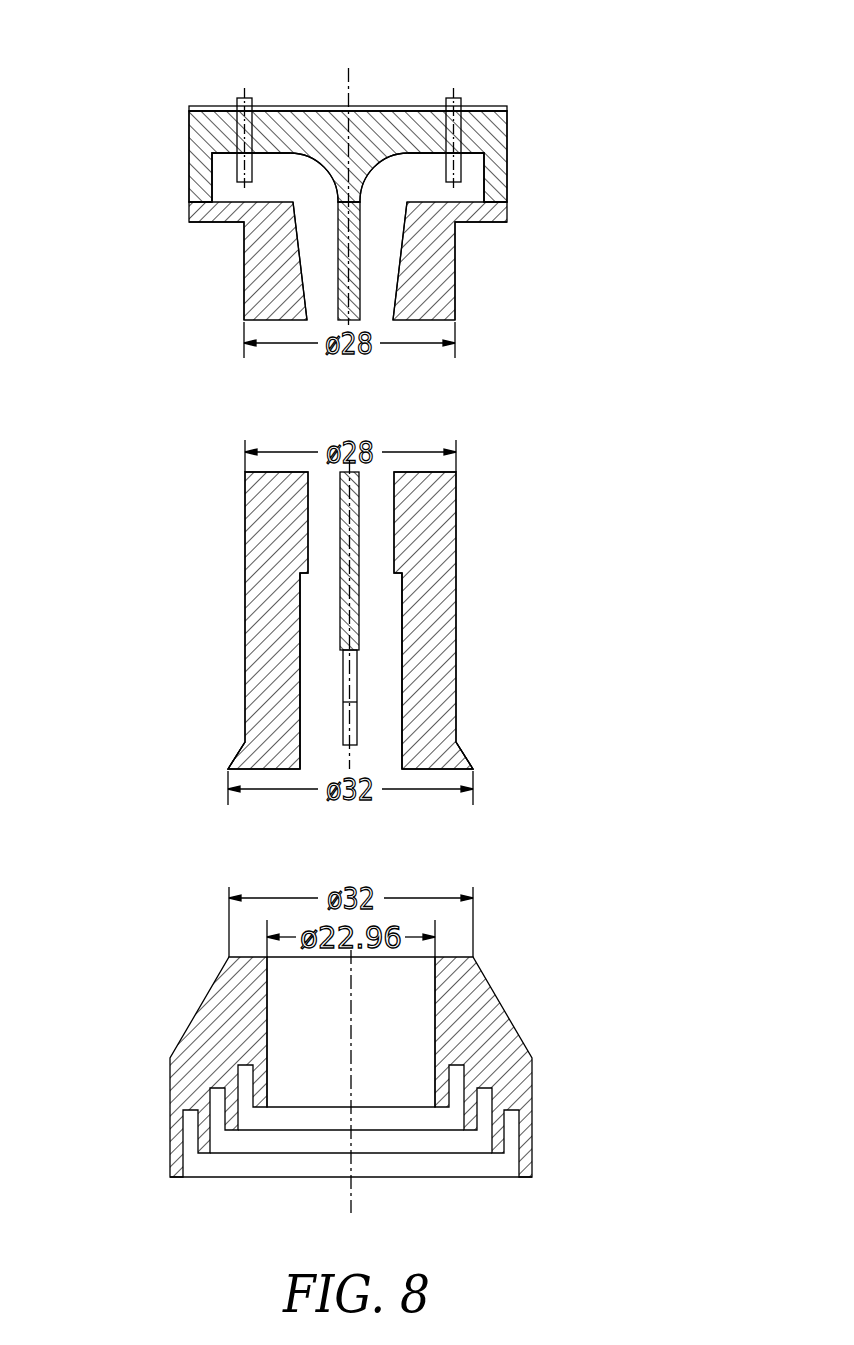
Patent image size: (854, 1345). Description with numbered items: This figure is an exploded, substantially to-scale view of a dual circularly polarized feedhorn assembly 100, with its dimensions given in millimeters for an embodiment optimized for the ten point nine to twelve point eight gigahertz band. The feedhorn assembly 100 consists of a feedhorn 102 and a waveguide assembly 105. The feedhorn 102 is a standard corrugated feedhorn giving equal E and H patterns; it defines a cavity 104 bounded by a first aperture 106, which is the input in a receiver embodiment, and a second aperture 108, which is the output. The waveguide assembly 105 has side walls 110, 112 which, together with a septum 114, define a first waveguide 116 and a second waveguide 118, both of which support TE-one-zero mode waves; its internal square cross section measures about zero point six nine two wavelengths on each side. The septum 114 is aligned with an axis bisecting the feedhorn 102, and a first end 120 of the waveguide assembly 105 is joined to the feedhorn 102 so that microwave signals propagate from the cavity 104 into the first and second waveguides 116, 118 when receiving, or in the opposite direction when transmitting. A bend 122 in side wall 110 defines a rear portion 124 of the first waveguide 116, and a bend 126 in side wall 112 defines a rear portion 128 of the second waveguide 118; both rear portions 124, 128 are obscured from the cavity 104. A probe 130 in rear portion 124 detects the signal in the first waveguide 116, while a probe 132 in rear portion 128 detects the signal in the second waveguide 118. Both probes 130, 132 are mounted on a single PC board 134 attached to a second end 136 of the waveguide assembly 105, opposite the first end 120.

The feedhorn assembly 100 is at (394, 302).
The feedhorn 102 is at (532, 1060).
The cavity 104 is at (415, 1035).
The waveguide assembly 105 is at (423, 546).
The first aperture 106 is at (351, 1201).
The second aperture 108 is at (387, 257).
The side wall 110 is at (203, 223).
The side wall 112 is at (507, 153).
The septum 114 is at (343, 238).
The first waveguide 116 is at (313, 283).
The second waveguide 118 is at (382, 603).
The first end 120 is at (229, 766).
The bend 122 is at (243, 223).
The rear portion 124 is at (251, 127).
The bend 126 is at (458, 223).
The rear portion 128 is at (445, 119).
The probe 130 is at (233, 170).
The probe 132 is at (460, 167).
The PC board 134 is at (297, 171).
The second end 136 is at (190, 108).